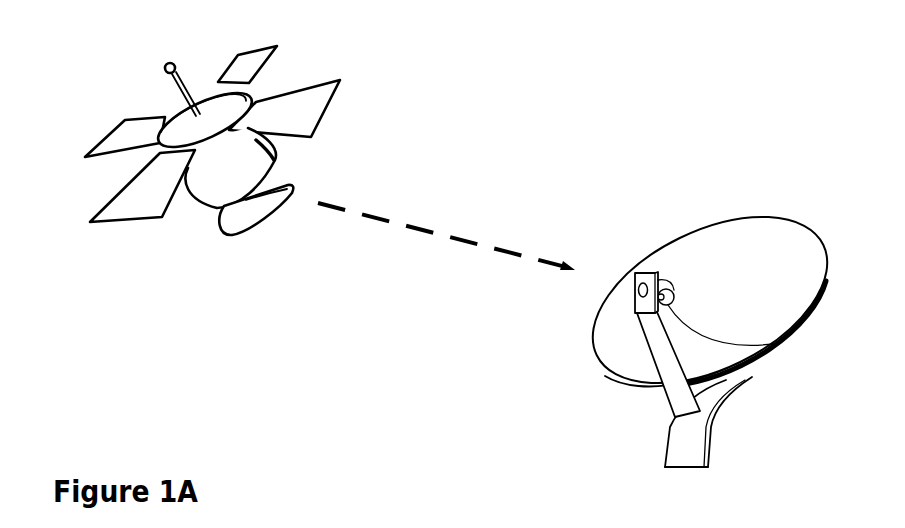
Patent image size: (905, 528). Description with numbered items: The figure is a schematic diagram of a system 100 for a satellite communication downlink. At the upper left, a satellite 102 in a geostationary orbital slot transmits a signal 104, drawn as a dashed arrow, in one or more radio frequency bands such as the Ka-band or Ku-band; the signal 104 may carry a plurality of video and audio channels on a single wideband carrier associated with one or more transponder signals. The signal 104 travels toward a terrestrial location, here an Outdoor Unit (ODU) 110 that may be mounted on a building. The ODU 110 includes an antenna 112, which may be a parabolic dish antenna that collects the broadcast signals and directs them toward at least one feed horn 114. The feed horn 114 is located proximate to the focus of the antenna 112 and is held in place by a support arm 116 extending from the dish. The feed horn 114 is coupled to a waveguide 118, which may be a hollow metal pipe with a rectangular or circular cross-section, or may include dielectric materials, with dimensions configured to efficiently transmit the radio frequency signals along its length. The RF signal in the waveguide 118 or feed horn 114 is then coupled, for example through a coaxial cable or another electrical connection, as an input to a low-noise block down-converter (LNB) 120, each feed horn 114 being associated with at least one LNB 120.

The system 100 is at (507, 141).
The satellite 102 is at (107, 220).
The signal 104 is at (462, 276).
The Outdoor Unit (ODU) 110 is at (762, 524).
The antenna 112 is at (803, 220).
The feed horn 114 is at (670, 280).
The support arm 116 is at (670, 405).
The waveguide 118 is at (757, 360).
The low-noise block down-converter (LNB) 120 is at (632, 285).